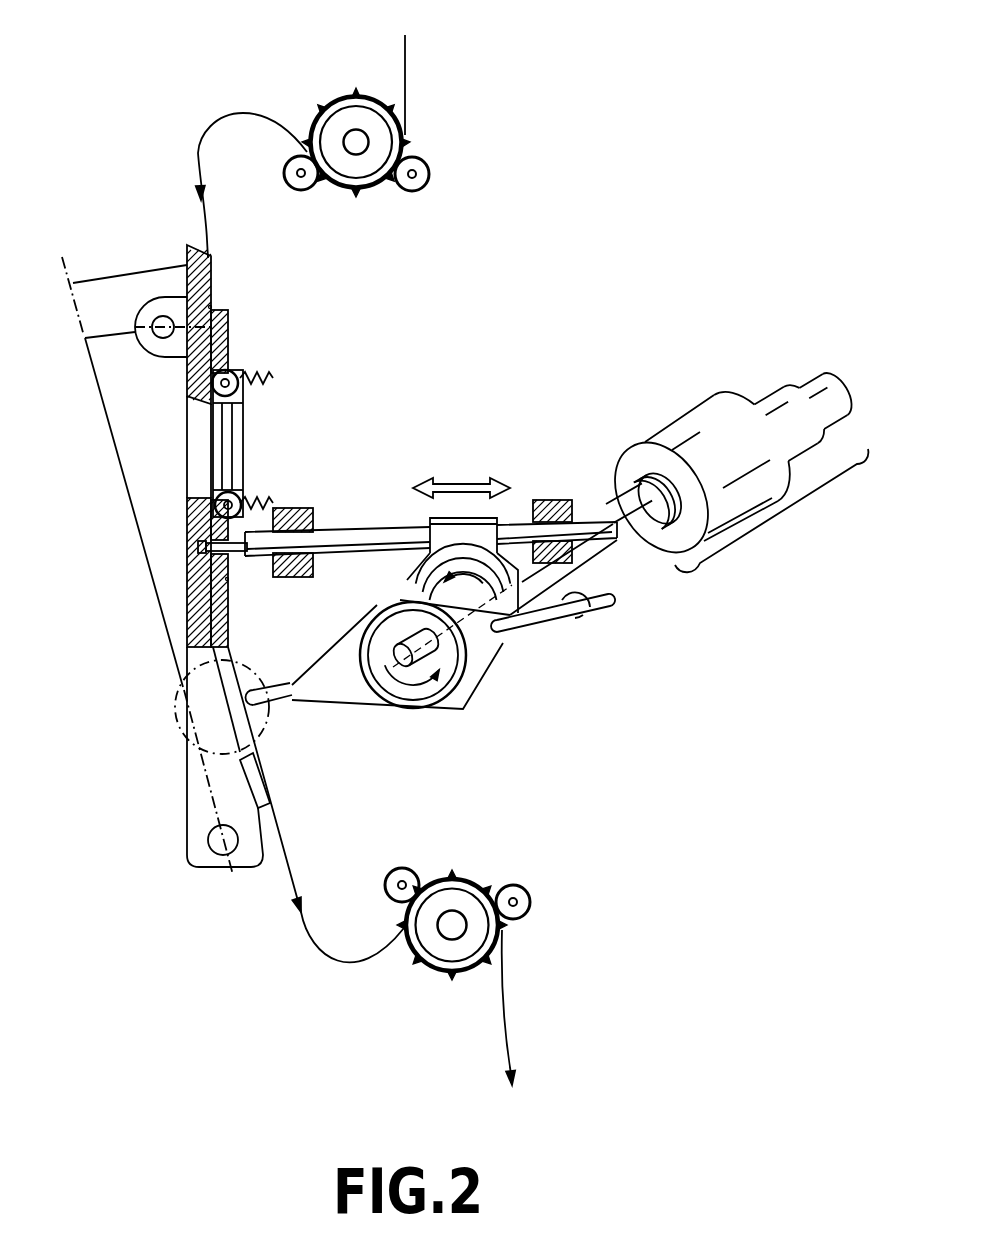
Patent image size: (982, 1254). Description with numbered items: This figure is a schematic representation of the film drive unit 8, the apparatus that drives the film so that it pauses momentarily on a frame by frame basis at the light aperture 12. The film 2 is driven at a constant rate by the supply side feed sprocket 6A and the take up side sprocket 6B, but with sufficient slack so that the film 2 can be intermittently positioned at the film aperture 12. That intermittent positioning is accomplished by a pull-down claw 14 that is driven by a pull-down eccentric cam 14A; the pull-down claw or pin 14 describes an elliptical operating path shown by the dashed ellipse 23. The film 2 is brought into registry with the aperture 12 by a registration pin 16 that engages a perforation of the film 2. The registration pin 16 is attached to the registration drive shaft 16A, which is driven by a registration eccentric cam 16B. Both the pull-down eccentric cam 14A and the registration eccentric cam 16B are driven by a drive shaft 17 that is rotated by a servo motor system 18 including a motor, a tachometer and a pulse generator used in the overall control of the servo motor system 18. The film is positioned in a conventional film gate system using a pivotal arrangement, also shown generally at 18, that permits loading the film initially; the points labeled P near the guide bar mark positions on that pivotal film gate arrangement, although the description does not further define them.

The film 2 is at (200, 147).
The supply side feed sprocket 6A is at (332, 101).
The take up side sprocket 6B is at (422, 962).
The film drive unit 8 is at (545, 284).
The light aperture 12 is at (186, 472).
The pull-down claw 14 is at (273, 703).
The pull-down eccentric cam 14A is at (473, 700).
The registration pin 16 is at (198, 547).
The registration drive shaft 16A is at (355, 530).
The registration eccentric cam 16B is at (410, 572).
The drive shaft 17 is at (632, 530).
The servo motor system 18 is at (780, 518).
The dashed ellipse 23 is at (187, 690).
The pivot point P is at (211, 306).